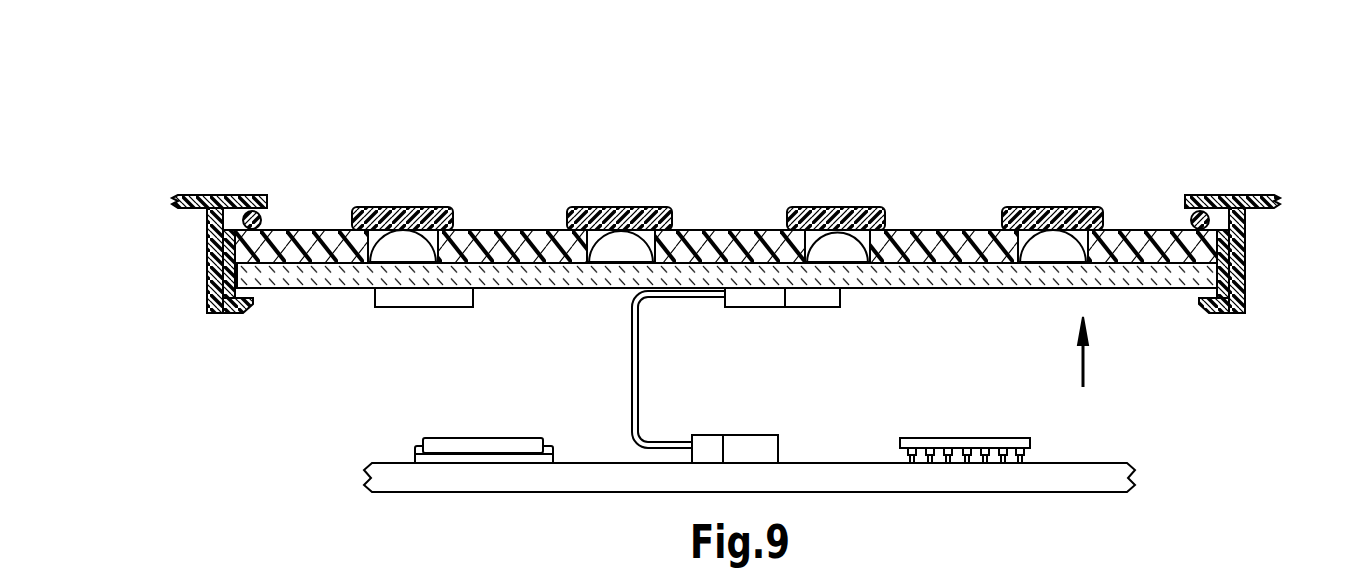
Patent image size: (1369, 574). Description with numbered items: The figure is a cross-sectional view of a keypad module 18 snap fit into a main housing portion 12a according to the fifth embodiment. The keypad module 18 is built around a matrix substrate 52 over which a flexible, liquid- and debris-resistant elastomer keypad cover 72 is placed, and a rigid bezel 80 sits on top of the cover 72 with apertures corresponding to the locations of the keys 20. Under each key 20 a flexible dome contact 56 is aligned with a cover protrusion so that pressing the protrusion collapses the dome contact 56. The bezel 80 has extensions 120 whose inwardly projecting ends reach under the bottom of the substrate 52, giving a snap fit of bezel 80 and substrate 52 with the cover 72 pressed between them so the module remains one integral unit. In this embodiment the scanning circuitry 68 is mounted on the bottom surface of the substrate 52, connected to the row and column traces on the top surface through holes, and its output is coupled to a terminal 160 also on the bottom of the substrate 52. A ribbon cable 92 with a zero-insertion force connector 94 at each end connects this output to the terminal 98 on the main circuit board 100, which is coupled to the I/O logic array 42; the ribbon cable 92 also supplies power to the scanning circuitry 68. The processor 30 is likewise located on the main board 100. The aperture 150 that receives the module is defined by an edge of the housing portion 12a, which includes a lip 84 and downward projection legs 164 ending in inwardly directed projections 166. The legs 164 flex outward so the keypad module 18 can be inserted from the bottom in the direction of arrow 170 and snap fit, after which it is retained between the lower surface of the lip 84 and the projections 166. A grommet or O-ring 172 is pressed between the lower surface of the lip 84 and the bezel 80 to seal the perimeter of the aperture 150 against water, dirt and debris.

The keypad module 18 is at (203, 150).
The main housing portion 12a is at (710, 255).
The lip 84 is at (240, 204).
The grommet or O-ring 172 is at (268, 220).
The key 20 is at (412, 205).
The keypad cover 72 is at (487, 235).
The flexible dome contact 56 is at (855, 230).
The bezel 80 is at (965, 235).
The aperture 150 is at (1166, 133).
The extension 120 is at (230, 268).
The projection leg 164 is at (215, 290).
The inwardly directed projection 166 is at (235, 305).
The scanning circuitry 68 is at (425, 297).
The matrix substrate 52 is at (978, 275).
The ribbon cable 92 is at (624, 343).
The zero-insertion force connector 94 is at (755, 295).
The terminal 160 is at (808, 305).
The arrow 170 is at (1085, 358).
The processor 30 is at (495, 438).
The terminal 98 is at (752, 438).
The I/O logic array 42 is at (955, 438).
The main circuit board 100 is at (1088, 478).